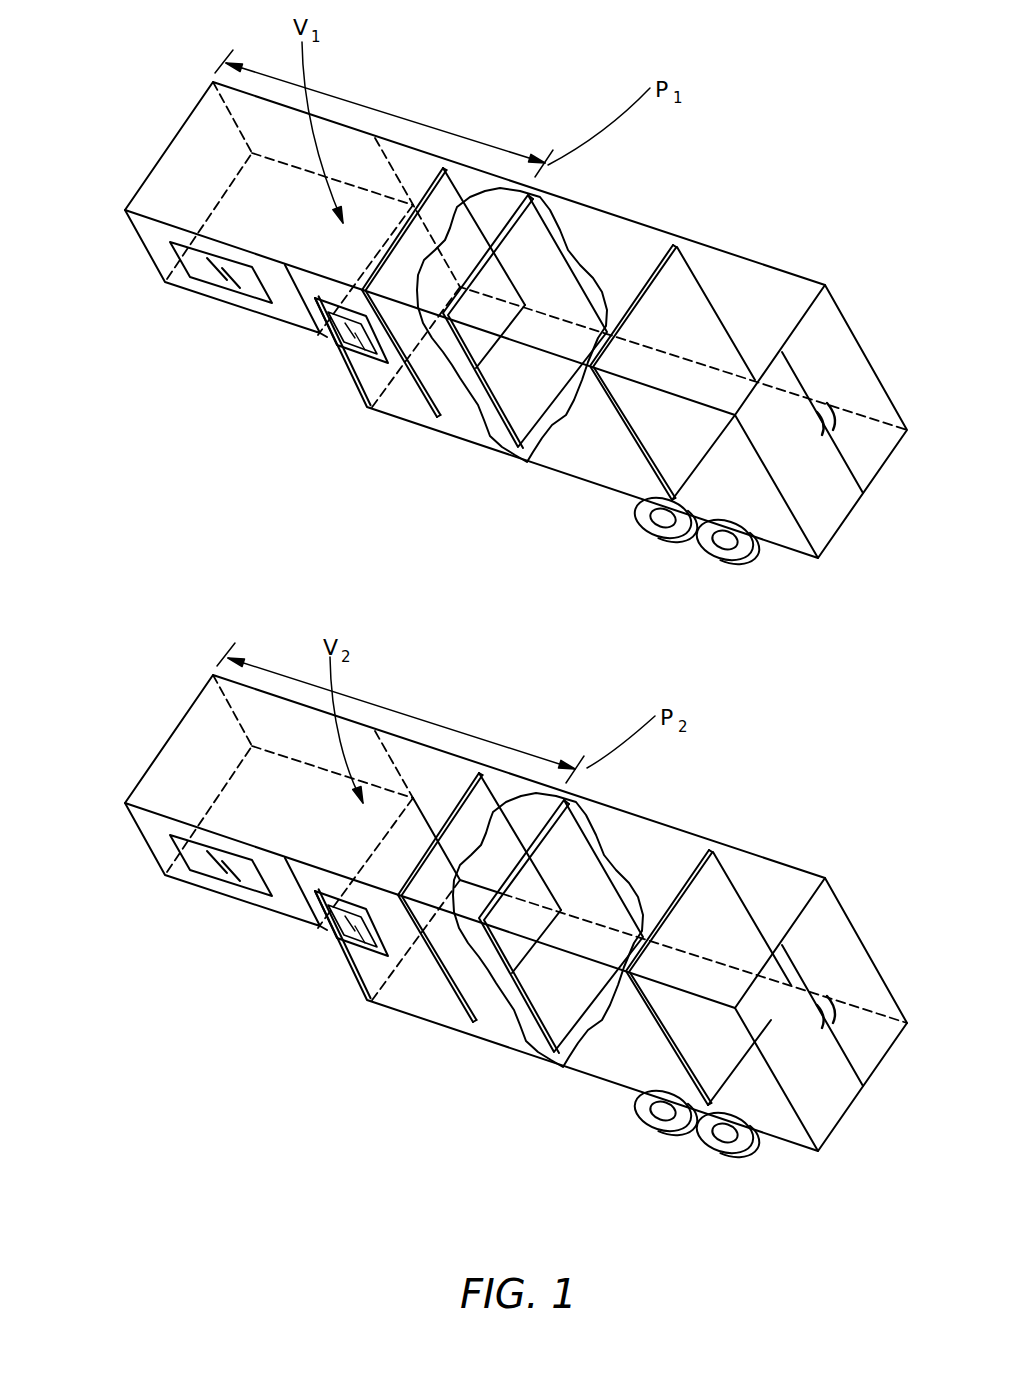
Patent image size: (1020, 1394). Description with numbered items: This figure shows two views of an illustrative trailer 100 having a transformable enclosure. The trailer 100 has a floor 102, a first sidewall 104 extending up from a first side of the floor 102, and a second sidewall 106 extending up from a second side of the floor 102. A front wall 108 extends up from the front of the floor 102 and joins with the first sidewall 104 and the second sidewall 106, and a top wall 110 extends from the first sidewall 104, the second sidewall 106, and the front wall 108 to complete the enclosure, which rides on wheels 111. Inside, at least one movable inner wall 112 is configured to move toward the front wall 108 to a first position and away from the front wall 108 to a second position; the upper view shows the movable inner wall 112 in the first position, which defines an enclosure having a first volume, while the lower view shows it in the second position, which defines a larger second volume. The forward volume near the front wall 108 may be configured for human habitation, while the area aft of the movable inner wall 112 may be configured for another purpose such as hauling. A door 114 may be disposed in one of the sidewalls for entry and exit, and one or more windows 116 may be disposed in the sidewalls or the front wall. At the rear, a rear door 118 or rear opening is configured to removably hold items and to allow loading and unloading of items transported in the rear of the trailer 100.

The trailer 100 is at (157, 398).
The floor 102 is at (525, 364).
The first sidewall 104 is at (561, 993).
The second sidewall 106 is at (418, 145).
The front wall 108 is at (143, 253).
The top wall 110 is at (637, 265).
The wheels 111 is at (742, 552).
The movable inner wall 112 is at (553, 957).
The door 114 is at (426, 340).
The window 116 is at (213, 864).
The rear door 118 is at (866, 663).